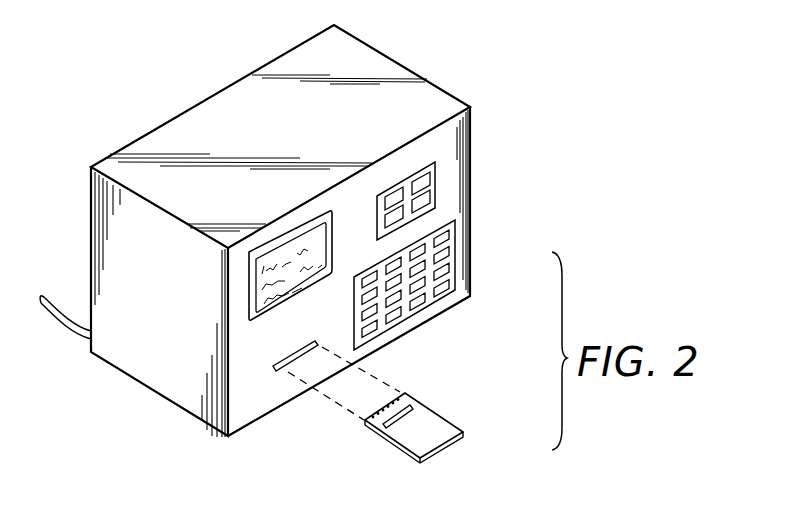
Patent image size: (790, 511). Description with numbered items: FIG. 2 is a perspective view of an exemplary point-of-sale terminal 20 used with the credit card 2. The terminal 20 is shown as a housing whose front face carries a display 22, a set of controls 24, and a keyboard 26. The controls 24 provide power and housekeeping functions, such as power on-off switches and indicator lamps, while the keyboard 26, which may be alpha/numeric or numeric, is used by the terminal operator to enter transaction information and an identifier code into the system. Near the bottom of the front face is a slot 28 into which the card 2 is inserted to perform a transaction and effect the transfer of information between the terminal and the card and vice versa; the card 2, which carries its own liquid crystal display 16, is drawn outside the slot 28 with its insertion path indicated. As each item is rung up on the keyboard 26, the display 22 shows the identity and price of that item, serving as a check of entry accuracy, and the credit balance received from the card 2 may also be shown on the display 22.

The card 2 is at (441, 455).
The liquid crystal display 16 is at (417, 406).
The terminal 20 is at (412, 61).
The display 22 is at (249, 281).
The set of controls 24 is at (433, 195).
The keyboard 26 is at (453, 262).
The slot 28 is at (297, 362).